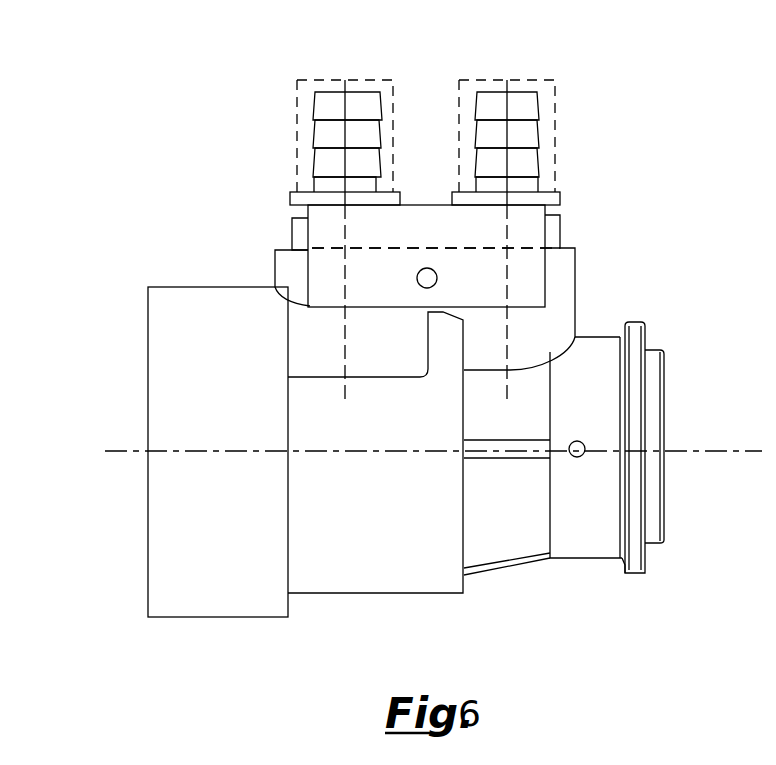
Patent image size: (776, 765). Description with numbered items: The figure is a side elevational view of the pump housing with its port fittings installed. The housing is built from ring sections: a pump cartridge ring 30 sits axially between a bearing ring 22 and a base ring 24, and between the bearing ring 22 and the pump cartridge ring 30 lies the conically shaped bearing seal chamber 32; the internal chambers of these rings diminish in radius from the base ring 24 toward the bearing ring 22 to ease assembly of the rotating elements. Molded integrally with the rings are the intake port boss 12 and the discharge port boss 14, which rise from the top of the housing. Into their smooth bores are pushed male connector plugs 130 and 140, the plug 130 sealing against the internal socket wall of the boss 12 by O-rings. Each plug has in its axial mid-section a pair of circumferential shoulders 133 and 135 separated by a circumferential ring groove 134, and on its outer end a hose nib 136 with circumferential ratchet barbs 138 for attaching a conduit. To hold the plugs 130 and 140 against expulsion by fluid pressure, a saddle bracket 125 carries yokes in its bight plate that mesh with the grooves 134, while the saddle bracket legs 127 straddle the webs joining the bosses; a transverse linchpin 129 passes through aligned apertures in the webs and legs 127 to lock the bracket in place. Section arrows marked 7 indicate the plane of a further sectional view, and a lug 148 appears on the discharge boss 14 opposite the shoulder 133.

The section line 7- 7 is at (215, 205).
The intake port boss 12 is at (283, 279).
The discharge port boss 14 is at (567, 292).
The bearing ring 22 is at (606, 529).
The base ring 24 is at (232, 342).
The pump cartridge ring 30 is at (417, 561).
The bearing seal chamber 32 is at (527, 537).
The saddle bracket 125 is at (383, 282).
The saddle bracket legs 127 is at (498, 294).
The linchpin 129 is at (430, 268).
The male connector plug 130 is at (325, 118).
The circumferential shoulder 133 is at (292, 233).
The circumferential ring groove 134 is at (297, 207).
The circumferential shoulder 135 is at (297, 190).
The hose nib 136 is at (360, 98).
The ratchet barbs 138 is at (312, 122).
The male connector plug 140 is at (552, 92).
The lug 148 is at (558, 239).